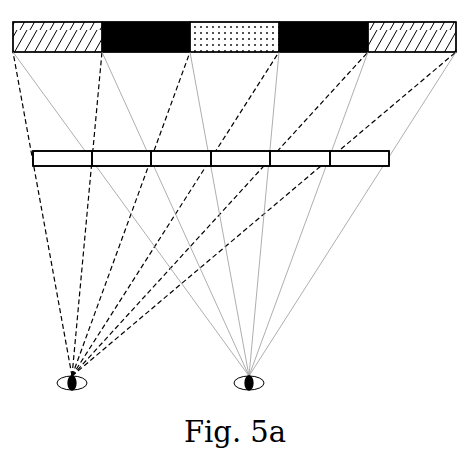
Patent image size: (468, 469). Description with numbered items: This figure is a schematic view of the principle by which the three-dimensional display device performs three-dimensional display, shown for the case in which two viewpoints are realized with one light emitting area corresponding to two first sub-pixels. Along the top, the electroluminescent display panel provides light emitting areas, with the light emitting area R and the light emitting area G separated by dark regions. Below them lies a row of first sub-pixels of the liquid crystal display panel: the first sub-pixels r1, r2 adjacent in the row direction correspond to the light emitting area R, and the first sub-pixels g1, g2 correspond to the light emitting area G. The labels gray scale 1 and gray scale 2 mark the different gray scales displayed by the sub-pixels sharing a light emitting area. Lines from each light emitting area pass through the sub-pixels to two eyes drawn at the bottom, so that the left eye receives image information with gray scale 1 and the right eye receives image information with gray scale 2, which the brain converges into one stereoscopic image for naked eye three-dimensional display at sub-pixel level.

The gray scale 1 is at (181, 149).
The gray scale 2 is at (240, 149).
The first sub-pixel r1 is at (181, 159).
The first sub-pixel r2 is at (240, 159).
The first sub-pixel g1 is at (181, 159).
The first sub-pixel g2 is at (240, 159).
The light emitting area R is at (234, 37).
The light emitting area G is at (234, 37).